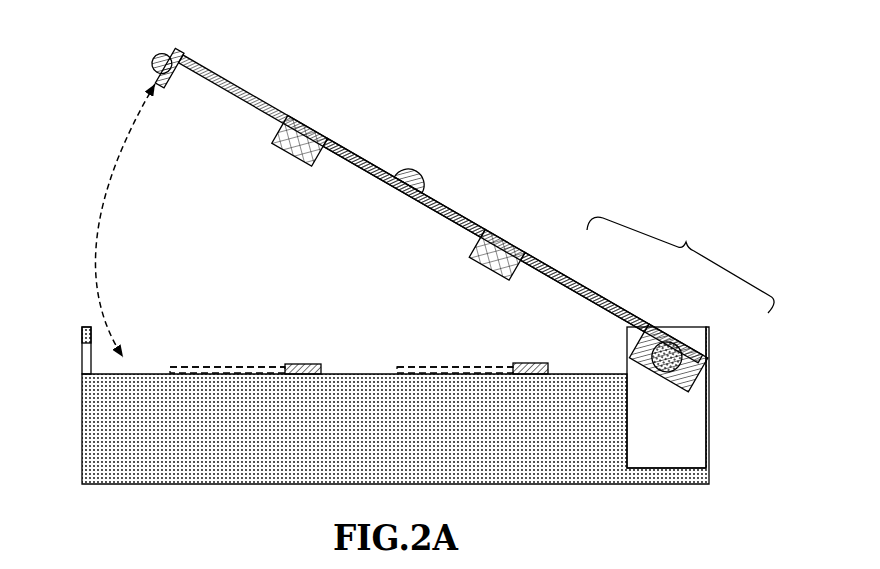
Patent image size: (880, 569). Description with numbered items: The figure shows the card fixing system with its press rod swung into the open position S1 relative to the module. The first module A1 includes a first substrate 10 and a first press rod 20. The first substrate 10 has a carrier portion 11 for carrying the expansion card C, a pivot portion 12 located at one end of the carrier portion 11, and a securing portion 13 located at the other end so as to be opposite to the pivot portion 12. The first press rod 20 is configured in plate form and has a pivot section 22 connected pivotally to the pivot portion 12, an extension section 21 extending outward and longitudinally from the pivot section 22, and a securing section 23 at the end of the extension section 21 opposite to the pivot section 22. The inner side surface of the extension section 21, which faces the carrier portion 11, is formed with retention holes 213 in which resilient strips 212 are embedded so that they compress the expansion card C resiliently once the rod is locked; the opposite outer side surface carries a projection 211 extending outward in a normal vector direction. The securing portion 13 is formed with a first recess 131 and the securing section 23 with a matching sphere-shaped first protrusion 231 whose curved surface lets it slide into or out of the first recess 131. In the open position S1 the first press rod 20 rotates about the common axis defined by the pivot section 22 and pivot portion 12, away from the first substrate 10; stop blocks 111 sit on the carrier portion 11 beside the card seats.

The first substrate 10 is at (708, 345).
The carrier portion 11 is at (223, 373).
The stop block 111 is at (292, 365).
The pivot portion 12 is at (668, 376).
The securing portion 13 is at (83, 383).
The first recess 131 is at (83, 347).
The first press rod 20 is at (430, 201).
The extension section 21 is at (368, 161).
The projection 211 is at (416, 170).
The resilient strips 212 is at (325, 136).
The retention holes 213 is at (290, 117).
The pivot section 22 is at (662, 332).
The securing section 23 is at (184, 53).
The first protrusion 231 is at (168, 58).
The first module A1 is at (680, 265).
The expansion card C is at (172, 367).
The open position S1 is at (73, 213).